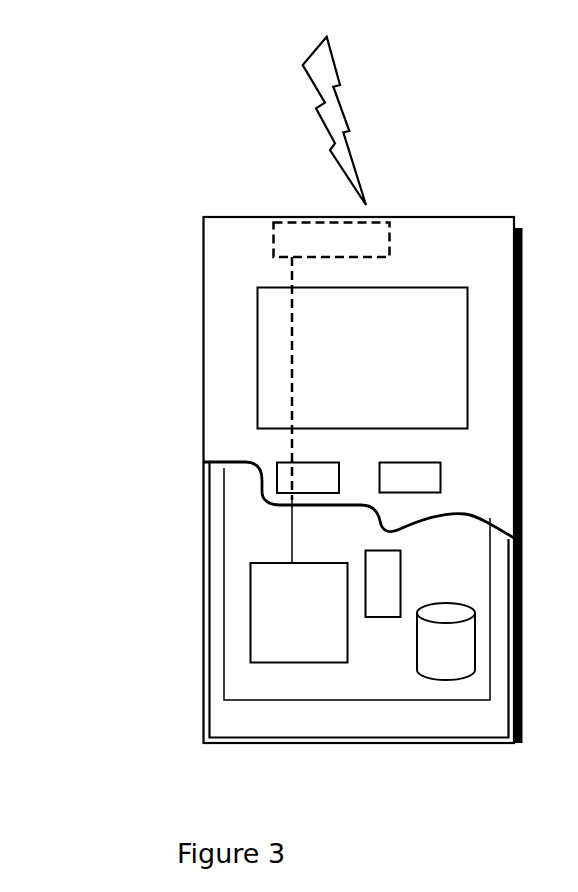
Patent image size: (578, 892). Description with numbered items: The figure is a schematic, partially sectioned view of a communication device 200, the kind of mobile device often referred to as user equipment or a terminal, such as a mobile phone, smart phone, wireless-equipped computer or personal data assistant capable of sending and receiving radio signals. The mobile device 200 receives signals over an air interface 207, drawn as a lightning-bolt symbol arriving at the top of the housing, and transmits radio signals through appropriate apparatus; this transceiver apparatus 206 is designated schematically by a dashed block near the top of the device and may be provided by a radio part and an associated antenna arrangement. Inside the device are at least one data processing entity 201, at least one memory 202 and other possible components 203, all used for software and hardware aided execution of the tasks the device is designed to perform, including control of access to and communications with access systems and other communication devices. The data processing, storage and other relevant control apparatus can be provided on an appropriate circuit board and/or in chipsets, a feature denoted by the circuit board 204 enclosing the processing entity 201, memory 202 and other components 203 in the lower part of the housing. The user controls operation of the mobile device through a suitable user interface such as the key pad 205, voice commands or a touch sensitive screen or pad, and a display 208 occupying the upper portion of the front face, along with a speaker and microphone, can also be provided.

The communication device 200 is at (203, 260).
The data processing entity 201 is at (257, 597).
The memory 202 is at (440, 653).
The other possible components 203 is at (382, 567).
The circuit board 204 is at (248, 682).
The key pad 205 is at (282, 477).
The transceiver apparatus 206 is at (380, 230).
The air interface 207 is at (364, 148).
The display 208 is at (273, 343).